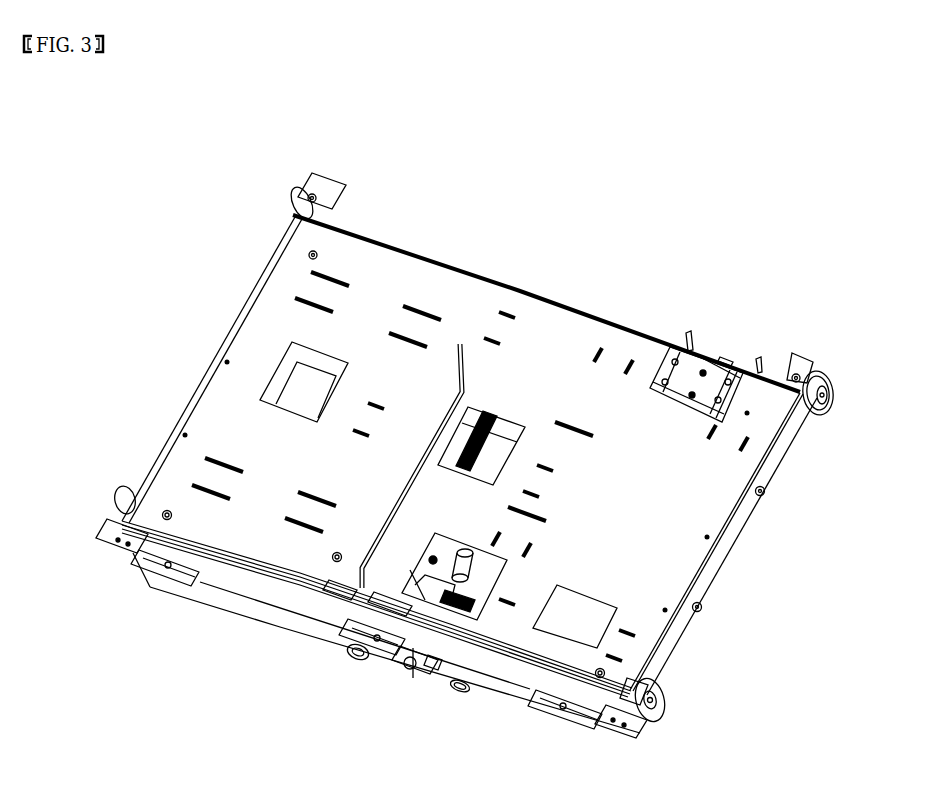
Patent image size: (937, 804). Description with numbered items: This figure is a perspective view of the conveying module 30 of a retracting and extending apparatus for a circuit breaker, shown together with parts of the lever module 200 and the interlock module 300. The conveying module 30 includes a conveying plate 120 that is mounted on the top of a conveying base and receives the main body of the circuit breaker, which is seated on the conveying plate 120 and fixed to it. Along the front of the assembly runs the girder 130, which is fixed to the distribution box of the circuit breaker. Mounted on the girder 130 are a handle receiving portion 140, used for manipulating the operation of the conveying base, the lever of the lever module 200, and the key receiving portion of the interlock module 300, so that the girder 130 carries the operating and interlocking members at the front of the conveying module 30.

The conveying module 30 is at (230, 140).
The conveying plate 120 is at (556, 330).
The girder 130 is at (250, 611).
The handle receiving portion 140 is at (357, 660).
The lever module 200 is at (418, 668).
The interlock module 300 is at (458, 707).